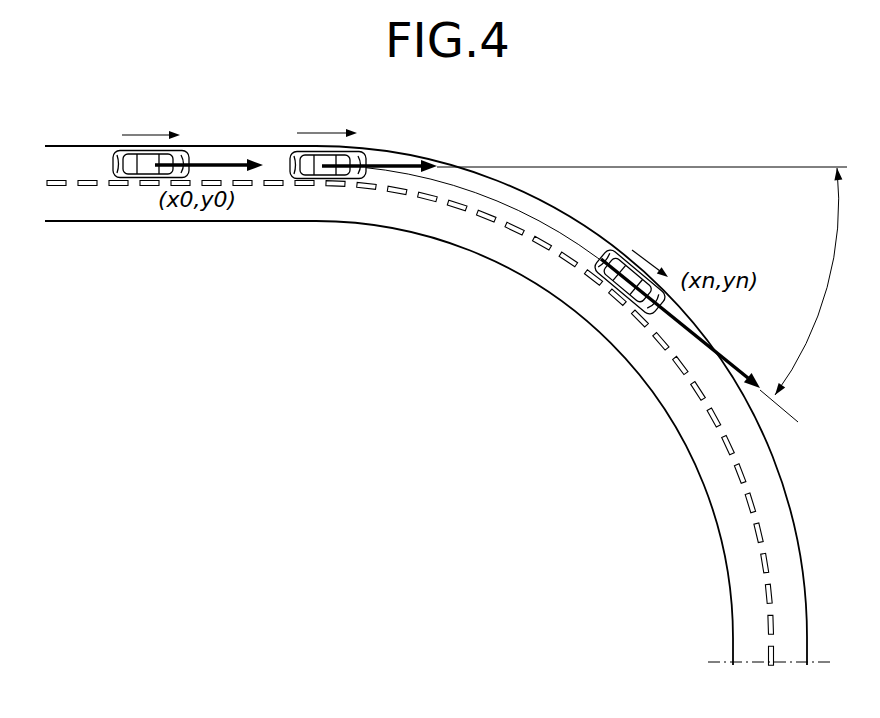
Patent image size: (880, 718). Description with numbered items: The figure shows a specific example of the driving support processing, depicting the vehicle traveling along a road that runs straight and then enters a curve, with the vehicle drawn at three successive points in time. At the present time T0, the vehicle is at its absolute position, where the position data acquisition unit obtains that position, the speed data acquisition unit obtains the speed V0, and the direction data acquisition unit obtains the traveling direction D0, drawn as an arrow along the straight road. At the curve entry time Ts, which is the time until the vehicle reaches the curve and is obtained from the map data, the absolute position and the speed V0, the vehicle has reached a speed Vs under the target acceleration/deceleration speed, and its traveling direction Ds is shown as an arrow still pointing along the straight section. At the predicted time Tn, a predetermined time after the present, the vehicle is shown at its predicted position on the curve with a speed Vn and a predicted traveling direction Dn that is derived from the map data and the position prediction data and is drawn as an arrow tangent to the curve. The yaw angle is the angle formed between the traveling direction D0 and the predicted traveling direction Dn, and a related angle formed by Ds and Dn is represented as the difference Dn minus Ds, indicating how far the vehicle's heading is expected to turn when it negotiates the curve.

The present time T0 is at (155, 118).
The curve entry time Ts is at (322, 120).
The predicted time Tn is at (617, 297).
The traveling direction at the present time D0 is at (230, 162).
The traveling direction at the curve entry time Ds is at (405, 157).
The predicted traveling direction Dn is at (733, 370).
The speed at the present time V0 is at (168, 133).
The speed at the curve entry time Vs is at (343, 130).
The vehicle speed at time Tn Vn is at (661, 255).